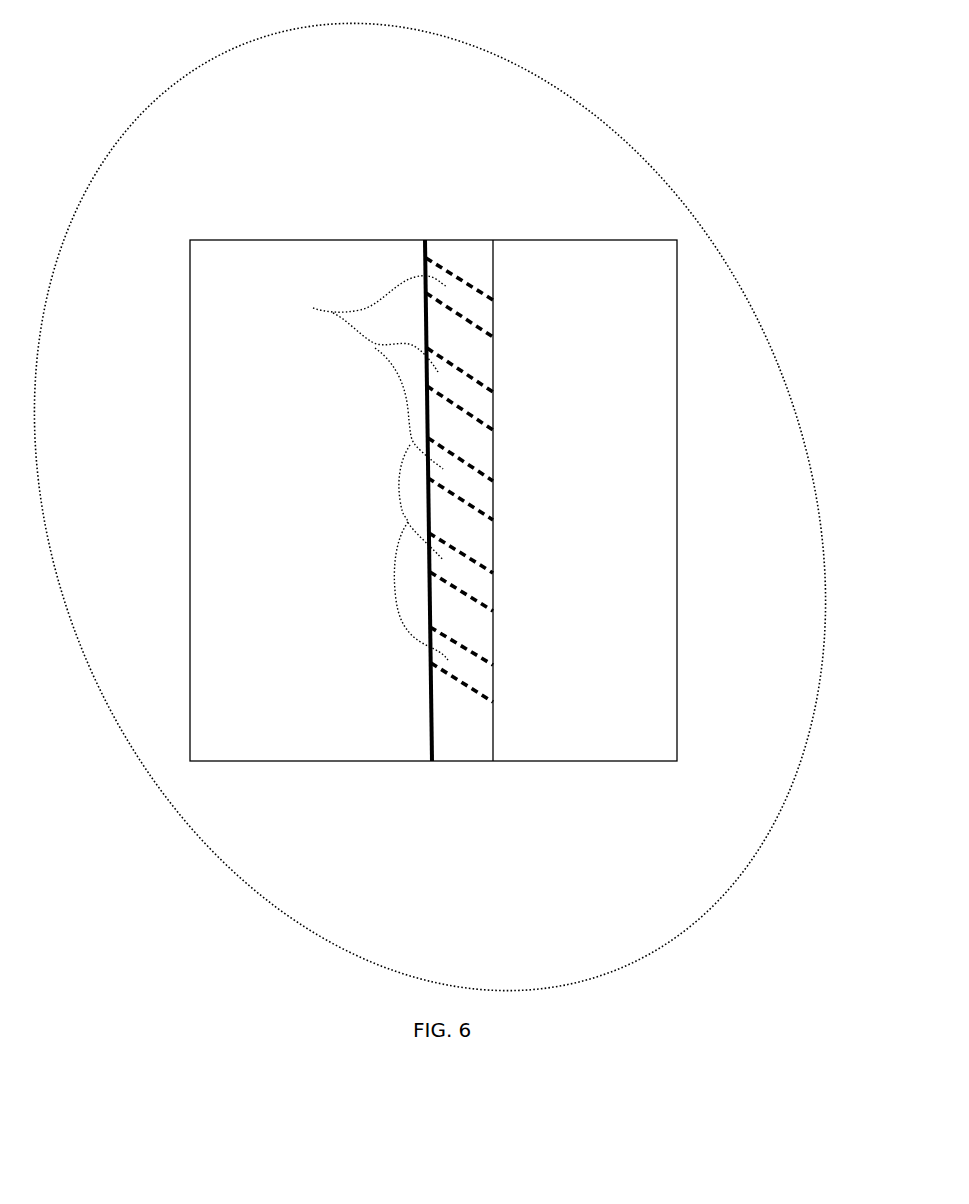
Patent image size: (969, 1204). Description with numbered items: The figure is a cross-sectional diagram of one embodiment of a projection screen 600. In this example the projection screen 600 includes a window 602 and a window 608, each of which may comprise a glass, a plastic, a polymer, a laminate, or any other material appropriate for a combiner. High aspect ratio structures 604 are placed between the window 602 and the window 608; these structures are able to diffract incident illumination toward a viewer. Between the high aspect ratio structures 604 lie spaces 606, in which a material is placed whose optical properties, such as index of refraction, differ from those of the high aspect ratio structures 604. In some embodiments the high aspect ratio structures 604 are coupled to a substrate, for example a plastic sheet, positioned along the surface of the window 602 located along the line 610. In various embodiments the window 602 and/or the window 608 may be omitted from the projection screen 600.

The projection screen 600 is at (607, 155).
The window 602 is at (294, 402).
The high aspect ratio structures 604 is at (364, 468).
The spaces 606 is at (475, 353).
The window 608 is at (615, 481).
The line 610 is at (430, 262).